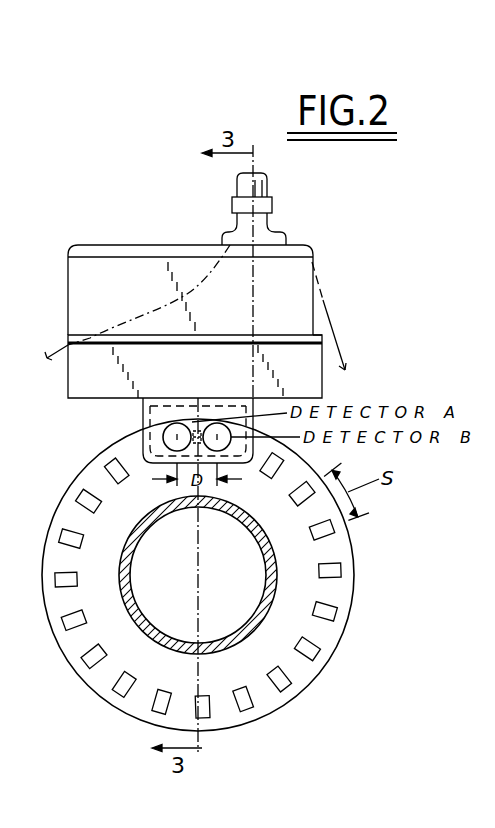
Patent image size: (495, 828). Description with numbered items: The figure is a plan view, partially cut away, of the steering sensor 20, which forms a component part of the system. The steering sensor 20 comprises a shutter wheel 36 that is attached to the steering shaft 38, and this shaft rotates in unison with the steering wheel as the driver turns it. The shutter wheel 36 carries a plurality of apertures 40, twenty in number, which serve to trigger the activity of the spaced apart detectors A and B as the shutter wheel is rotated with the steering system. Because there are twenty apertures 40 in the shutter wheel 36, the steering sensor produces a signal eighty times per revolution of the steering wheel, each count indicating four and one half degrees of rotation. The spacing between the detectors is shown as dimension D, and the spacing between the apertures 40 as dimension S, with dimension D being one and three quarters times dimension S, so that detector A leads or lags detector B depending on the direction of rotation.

The steering sensor 20 is at (372, 325).
The shutter wheel 36 is at (353, 604).
The steering shaft 38 is at (262, 588).
The apertures 40 is at (300, 687).